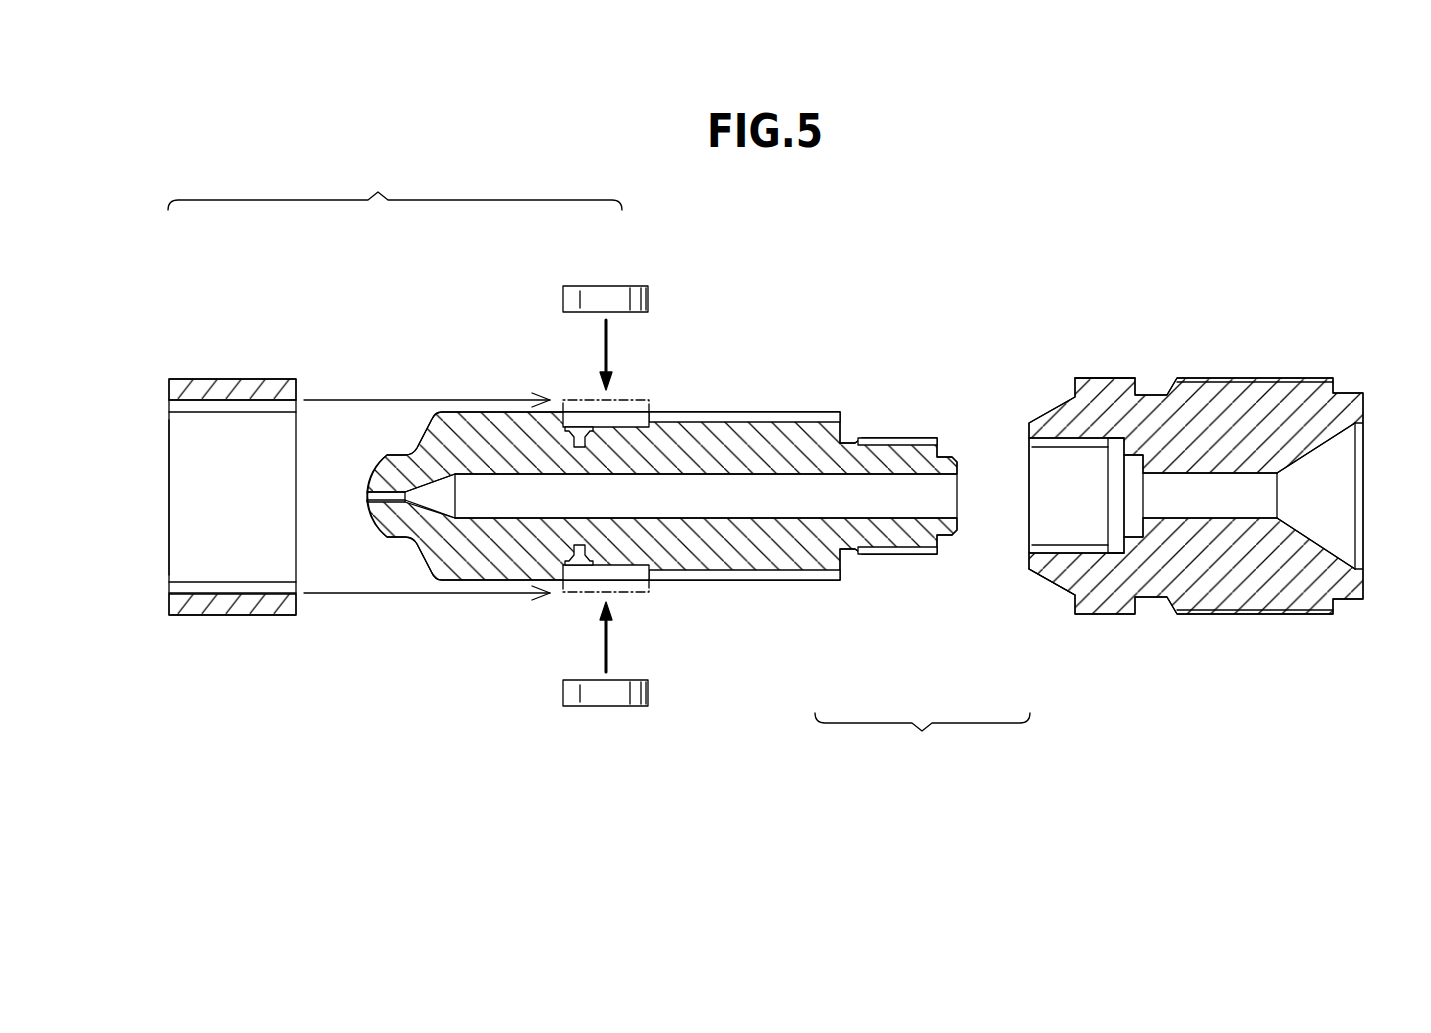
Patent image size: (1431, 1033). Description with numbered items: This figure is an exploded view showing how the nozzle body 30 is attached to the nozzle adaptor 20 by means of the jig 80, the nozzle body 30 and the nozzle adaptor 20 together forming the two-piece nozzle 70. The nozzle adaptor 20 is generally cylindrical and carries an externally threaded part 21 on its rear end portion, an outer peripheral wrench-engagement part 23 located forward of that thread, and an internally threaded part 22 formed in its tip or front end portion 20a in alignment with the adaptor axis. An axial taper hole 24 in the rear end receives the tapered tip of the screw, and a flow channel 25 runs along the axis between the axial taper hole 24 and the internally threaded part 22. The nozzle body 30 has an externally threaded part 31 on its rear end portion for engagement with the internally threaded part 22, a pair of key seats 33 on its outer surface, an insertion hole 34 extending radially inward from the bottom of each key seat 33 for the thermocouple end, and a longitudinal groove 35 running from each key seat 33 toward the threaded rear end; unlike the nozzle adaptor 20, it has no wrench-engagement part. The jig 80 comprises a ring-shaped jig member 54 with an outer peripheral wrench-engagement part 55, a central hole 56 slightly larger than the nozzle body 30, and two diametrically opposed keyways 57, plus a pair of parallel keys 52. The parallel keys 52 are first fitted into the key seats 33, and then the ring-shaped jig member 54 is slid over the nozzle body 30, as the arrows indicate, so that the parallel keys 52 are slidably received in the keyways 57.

The nozzle adaptor 20 is at (1196, 510).
The tip or front end portion of the nozzle adaptor 20a is at (1063, 580).
The externally threaded part of the nozzle adaptor 21 is at (1225, 378).
The internally threaded part of the nozzle adaptor 22 is at (1038, 455).
The outer peripheral wrench-engagement part 23 is at (1108, 378).
The axial taper hole 24 is at (1320, 433).
The flow channel 25 is at (1216, 474).
The nozzle body 30 is at (662, 500).
The externally threaded part of the nozzle body 31 is at (888, 437).
The key seat 33 is at (567, 420).
The insertion hole 34 is at (581, 427).
The longitudinal groove 35 is at (722, 412).
The parallel key 52 is at (605, 297).
The ring-shaped jig member 54 is at (198, 415).
The outer peripheral wrench-engagement part of the jig member 55 is at (247, 378).
The central hole 56 is at (205, 492).
The keyway 57 is at (210, 396).
The two-piece nozzle 70 is at (922, 740).
The jig 80 is at (395, 186).